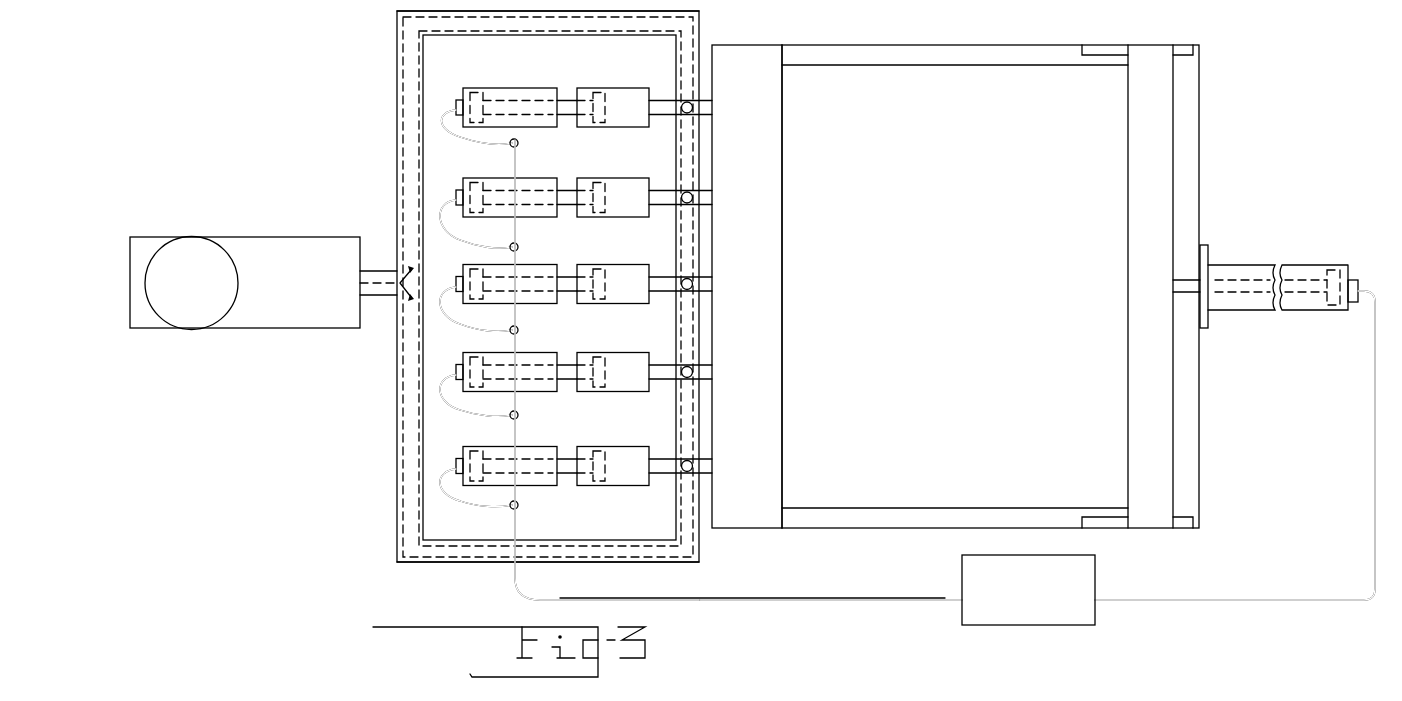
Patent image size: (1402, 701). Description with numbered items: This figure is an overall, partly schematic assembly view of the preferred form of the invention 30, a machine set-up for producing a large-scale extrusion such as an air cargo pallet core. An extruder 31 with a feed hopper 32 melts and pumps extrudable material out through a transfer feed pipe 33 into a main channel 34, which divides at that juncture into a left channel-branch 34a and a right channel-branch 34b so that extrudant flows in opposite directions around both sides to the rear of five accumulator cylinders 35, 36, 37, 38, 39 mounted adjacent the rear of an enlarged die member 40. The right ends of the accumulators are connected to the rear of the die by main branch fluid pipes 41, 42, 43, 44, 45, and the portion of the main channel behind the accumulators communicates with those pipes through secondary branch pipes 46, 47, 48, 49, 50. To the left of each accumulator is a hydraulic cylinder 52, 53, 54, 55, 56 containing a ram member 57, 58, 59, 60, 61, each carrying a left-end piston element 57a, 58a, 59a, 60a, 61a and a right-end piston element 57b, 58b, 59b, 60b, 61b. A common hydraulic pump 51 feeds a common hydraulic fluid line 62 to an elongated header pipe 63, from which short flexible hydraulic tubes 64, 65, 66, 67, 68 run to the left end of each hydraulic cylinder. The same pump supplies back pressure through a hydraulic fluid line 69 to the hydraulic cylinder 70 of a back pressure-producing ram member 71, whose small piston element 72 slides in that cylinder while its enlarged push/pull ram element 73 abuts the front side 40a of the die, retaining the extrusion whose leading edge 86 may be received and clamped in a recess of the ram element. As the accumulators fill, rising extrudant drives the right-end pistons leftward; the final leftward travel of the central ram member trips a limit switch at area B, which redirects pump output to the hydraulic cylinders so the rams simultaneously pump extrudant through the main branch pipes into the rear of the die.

The preferred form of the invention 30 is at (984, 46).
The extruder 31 is at (226, 329).
The feed hopper 32 is at (190, 240).
The transfer feed pipe 33 is at (378, 271).
The main channel 34 is at (365, 360).
The left channel-branch 34a is at (397, 95).
The right channel-branch 34b is at (397, 530).
The accumulator cylinder 35 is at (620, 446).
The accumulator cylinder 36 is at (620, 352).
The accumulator cylinder 37 is at (620, 264).
The accumulator cylinder 38 is at (616, 178).
The accumulator cylinder 39 is at (617, 88).
The die member 40 is at (753, 243).
The front side of die member 40a is at (782, 252).
The main branch fluid pipe 41 is at (712, 466).
The main branch fluid pipe 42 is at (712, 372).
The main branch fluid pipe 43 is at (712, 284).
The main branch fluid pipe 44 is at (712, 197).
The main branch fluid pipe 45 is at (712, 108).
The secondary branch pipe 46 is at (676, 479).
The secondary branch pipe 47 is at (676, 385).
The secondary branch pipe 48 is at (676, 297).
The secondary branch pipe 49 is at (676, 205).
The secondary branch pipe 50 is at (682, 113).
The common hydraulic pump 51 is at (1095, 576).
The hydraulic cylinder 52 is at (541, 446).
The hydraulic cylinder 53 is at (541, 352).
The hydraulic cylinder 54 is at (541, 264).
The hydraulic cylinder 55 is at (541, 178).
The hydraulic cylinder 56 is at (542, 88).
The ram member 57 is at (566, 459).
The left-end piston element 57a is at (468, 456).
The right-end piston element 57b is at (600, 446).
The ram member 58 is at (566, 365).
The left-end piston element 58a is at (468, 353).
The right-end piston element 58b is at (598, 352).
The ram member 59 is at (566, 277).
The left-end piston element 59a is at (470, 265).
The right-end piston element 59b is at (597, 264).
The ram member 60 is at (566, 190).
The left-end piston element 60a is at (476, 178).
The right-end piston element 60b is at (598, 178).
The ram member 61 is at (566, 100).
The left-end piston element 61a is at (472, 88).
The right-end piston element 61b is at (597, 88).
The common hydraulic fluid line 62 is at (865, 593).
The common header pipe 63 is at (508, 431).
The flexible hydraulic tube 64 is at (458, 496).
The flexible hydraulic tube 65 is at (447, 375).
The flexible hydraulic tube 66 is at (447, 287).
The flexible hydraulic tube 67 is at (447, 200).
The flexible hydraulic tube 68 is at (446, 112).
The hydraulic fluid line 69 is at (1234, 594).
The hydraulic cylinder 70 is at (1245, 265).
The back pressure-producing ram member 71 is at (1188, 294).
The small piston element 72 is at (1325, 306).
The push/pull ram element 73 is at (1161, 156).
The leading edge of extrusion 86 is at (983, 219).
The limit switch area B is at (565, 296).